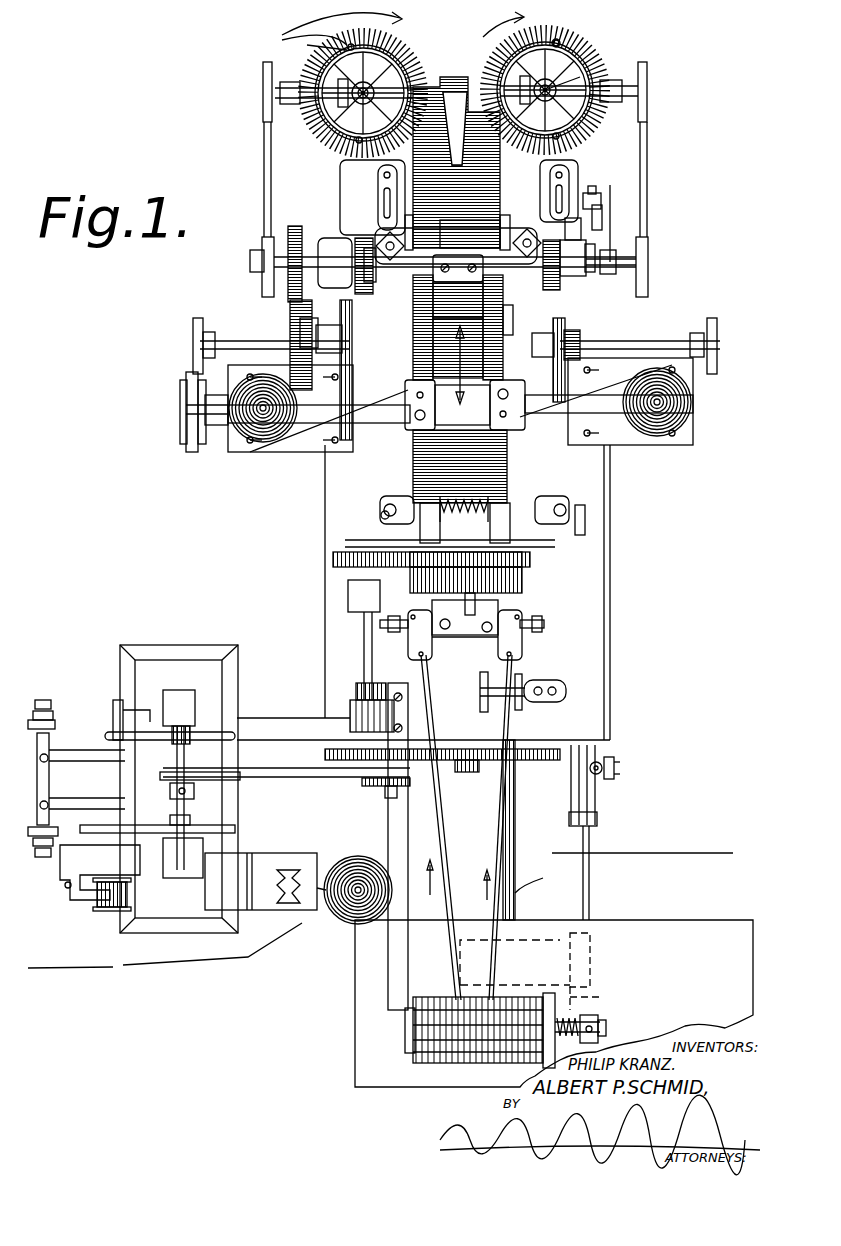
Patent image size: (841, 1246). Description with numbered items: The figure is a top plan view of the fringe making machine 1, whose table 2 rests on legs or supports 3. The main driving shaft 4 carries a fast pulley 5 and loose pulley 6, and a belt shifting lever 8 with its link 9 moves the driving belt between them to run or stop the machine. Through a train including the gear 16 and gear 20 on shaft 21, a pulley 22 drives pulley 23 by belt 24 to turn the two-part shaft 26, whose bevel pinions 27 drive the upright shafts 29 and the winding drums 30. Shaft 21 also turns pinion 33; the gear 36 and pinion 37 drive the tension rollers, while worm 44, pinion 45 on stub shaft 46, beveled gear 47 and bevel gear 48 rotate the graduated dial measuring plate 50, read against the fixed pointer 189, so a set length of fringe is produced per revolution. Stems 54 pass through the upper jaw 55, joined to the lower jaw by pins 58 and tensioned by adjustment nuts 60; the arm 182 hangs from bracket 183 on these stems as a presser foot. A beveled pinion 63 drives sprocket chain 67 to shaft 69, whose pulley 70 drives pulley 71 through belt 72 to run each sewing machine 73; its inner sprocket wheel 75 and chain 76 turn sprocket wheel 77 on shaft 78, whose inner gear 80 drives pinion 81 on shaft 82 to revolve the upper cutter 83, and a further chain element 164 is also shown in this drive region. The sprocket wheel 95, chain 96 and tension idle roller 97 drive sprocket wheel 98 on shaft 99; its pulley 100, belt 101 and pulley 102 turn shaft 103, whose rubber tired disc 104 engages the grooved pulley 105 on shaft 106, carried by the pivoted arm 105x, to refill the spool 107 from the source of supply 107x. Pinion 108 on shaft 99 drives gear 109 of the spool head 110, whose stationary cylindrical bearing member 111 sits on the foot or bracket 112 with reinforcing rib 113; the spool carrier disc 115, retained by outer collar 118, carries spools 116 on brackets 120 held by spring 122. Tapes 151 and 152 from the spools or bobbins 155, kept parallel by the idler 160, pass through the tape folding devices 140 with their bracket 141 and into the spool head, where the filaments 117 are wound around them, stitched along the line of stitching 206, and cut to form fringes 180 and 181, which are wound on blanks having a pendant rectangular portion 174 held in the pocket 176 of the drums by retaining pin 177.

The fringe making machine 1 is at (611, 576).
The table 2 is at (611, 548).
The legs or supports 3 is at (456, 254).
The main driving shaft 4 is at (383, 921).
The fast pulley 5 is at (575, 961).
The loose or idler pulley 6 is at (600, 997).
The belt shifting lever 8 is at (603, 772).
The link 9 is at (587, 897).
The gear 16 is at (293, 340).
The gear 20 is at (290, 229).
The shaft 21 is at (263, 268).
The pulley 22 is at (263, 247).
The pulley 23 is at (262, 78).
The belt 24 is at (265, 137).
The two-part shaft 26 is at (487, 84).
The bevel pinions 27 is at (310, 68).
The upright shafts 29 is at (335, 138).
The winding drums 30 is at (545, 90).
The pinion 33 is at (360, 245).
The gear 36 is at (363, 93).
The pinion 37 is at (368, 246).
The worm 44 is at (611, 279).
The pinion 45 is at (615, 256).
The stub shaft 46 is at (583, 248).
The beveled gear 47 is at (607, 240).
The bevel gear 48 is at (592, 193).
The graduated dial measuring plate 50 is at (613, 192).
The stems 54 is at (458, 238).
The upper jaw 55 is at (383, 182).
The pins 58 is at (380, 173).
The adjustment nuts 60 is at (457, 209).
The beveled pinion 63 is at (568, 330).
The sprocket chain 67 is at (567, 355).
The shaft 69 is at (233, 343).
The pulley 70 is at (197, 338).
The pulley 71 is at (215, 437).
The belt 72 is at (203, 380).
The sewing machine 73 is at (290, 443).
The inner sprocket wheel 75 is at (460, 408).
The sprocket chain 76 is at (335, 261).
The sprocket wheel 77 is at (353, 297).
The shaft 78 is at (335, 318).
The inner gear 80 is at (456, 252).
The pinion 81 is at (383, 397).
The shaft 82 is at (443, 367).
The upper cutter 83 is at (508, 318).
The sprocket wheel 95 is at (573, 800).
The sprocket chain 96 is at (560, 760).
The tension idle roller 97 is at (462, 765).
The sprocket wheel 98 is at (325, 756).
The shaft 99 is at (363, 645).
The pulley 100 is at (330, 778).
The belt 101 is at (187, 758).
The pulley 102 is at (196, 790).
The shaft 103 is at (187, 760).
The rubber tired disc 104 is at (232, 829).
The grooved pulley 105 is at (107, 790).
The pivoted arm 105x is at (67, 883).
The shaft 106 is at (127, 882).
The spool 107 is at (107, 911).
The source of supply 107x is at (347, 910).
The pinion 108 is at (340, 560).
The gear 109 is at (522, 578).
The spool head or carrier 110 is at (522, 600).
The stationary cylindrical bearing member 111 is at (522, 582).
The foot or bracket 112 is at (492, 633).
The reinforcing rib 113 is at (467, 615).
The spool carrier disc 115 is at (552, 522).
The spools 116 is at (380, 511).
The filaments 117 is at (415, 500).
The outer collar 118 is at (348, 592).
The brackets 120 is at (345, 542).
The spring 122 is at (590, 513).
The tape folding devices 140 is at (432, 650).
The bracket 141 is at (400, 635).
The tape 151 is at (438, 818).
The tape 152 is at (497, 860).
The spools or bobbins 155 is at (507, 1060).
The idler 160 is at (567, 703).
The chain 164 is at (542, 360).
The pendant rectangular portion 174 is at (580, 77).
The semi-circular slot or pocket 176 is at (477, 465).
The retaining pin 177 is at (295, 33).
The fringe 180 is at (556, 40).
The fringe 181 is at (257, 162).
The arm 182 is at (458, 300).
The bracket 183 is at (470, 234).
The fixed pointer or index 189 is at (462, 80).
The line of stitching 206 is at (415, 464).